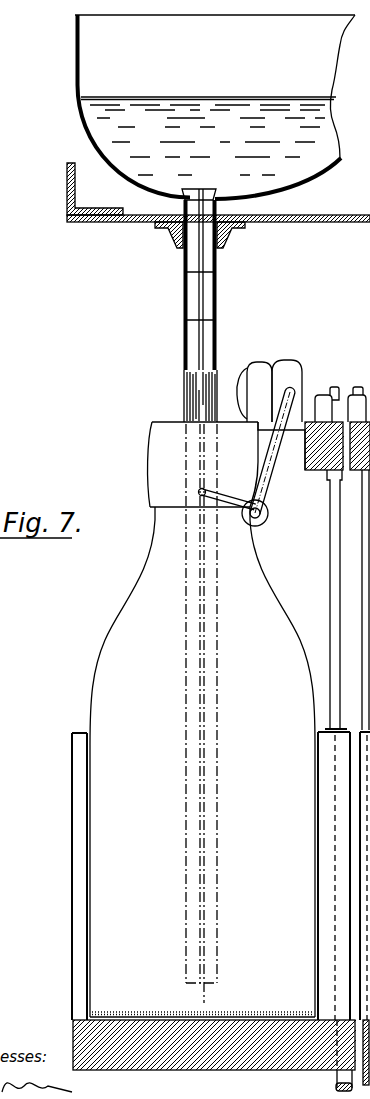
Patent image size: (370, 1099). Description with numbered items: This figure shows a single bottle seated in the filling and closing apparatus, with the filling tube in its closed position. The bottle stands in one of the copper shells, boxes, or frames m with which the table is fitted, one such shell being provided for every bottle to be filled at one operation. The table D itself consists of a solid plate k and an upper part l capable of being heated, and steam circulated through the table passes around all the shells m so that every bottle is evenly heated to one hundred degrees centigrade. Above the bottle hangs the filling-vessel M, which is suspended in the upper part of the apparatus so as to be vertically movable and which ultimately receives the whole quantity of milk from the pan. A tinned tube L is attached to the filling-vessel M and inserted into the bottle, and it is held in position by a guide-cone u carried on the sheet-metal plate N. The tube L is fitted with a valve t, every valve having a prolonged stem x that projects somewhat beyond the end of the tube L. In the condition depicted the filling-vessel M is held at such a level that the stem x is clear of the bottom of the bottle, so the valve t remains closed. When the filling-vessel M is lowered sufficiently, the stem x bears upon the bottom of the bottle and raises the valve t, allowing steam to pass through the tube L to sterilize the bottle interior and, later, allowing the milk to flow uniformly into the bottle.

The filling-vessel M is at (215, 107).
The sheet-metal plate N is at (330, 223).
The valve t is at (200, 190).
The guide-cone u is at (221, 247).
The tube L is at (183, 318).
The prolonged stem x is at (205, 347).
The plate or table D is at (196, 876).
The upper part l is at (71, 773).
The shell, box, or frame m is at (318, 851).
The solid plate k is at (243, 1071).